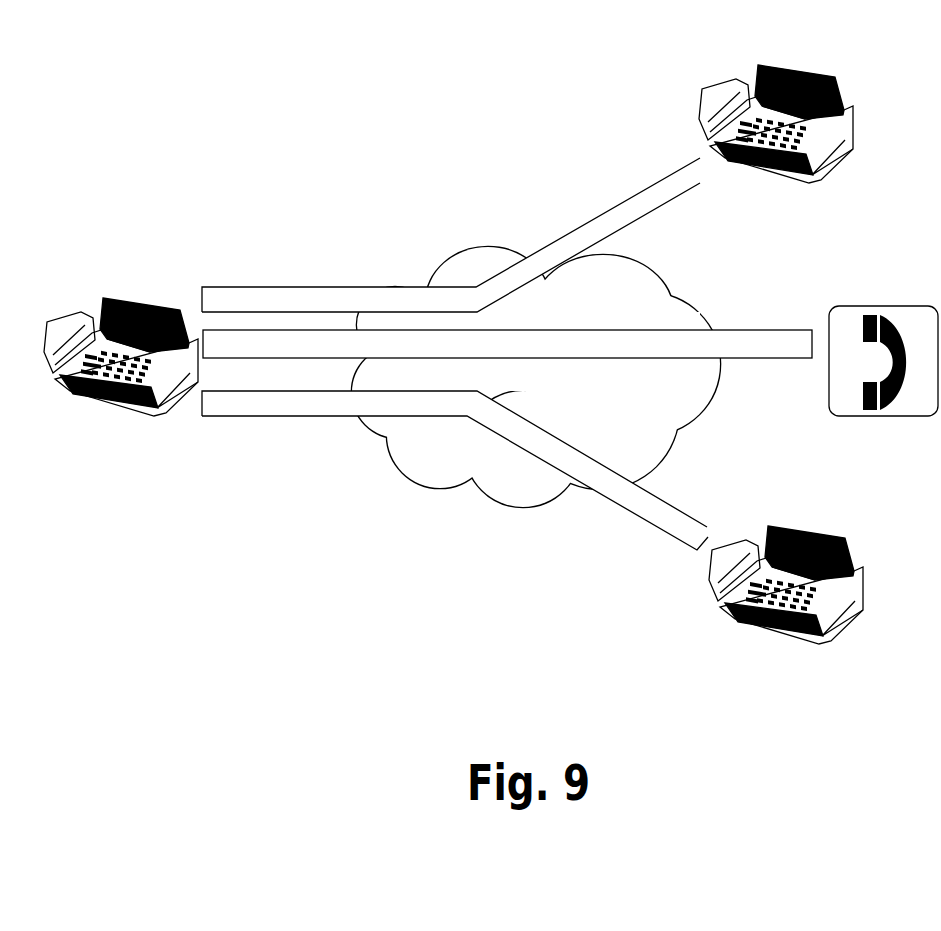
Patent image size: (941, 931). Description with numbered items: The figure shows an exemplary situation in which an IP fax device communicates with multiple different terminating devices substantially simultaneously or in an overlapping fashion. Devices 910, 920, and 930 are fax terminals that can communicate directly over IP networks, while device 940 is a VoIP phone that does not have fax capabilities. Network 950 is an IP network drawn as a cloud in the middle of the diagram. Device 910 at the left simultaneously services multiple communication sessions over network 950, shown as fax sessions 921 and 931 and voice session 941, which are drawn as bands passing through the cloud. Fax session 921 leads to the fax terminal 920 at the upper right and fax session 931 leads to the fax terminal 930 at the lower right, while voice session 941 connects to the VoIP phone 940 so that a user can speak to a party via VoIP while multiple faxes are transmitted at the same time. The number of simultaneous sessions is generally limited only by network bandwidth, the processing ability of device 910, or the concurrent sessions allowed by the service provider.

The fax terminal 910 is at (160, 420).
The fax terminal 920 is at (812, 183).
The fax terminal 930 is at (823, 645).
The fax session 921 is at (690, 192).
The fax session 931 is at (670, 537).
The VoIP phone 940 is at (900, 417).
The voice session 941 is at (773, 362).
The IP network 950 is at (690, 302).